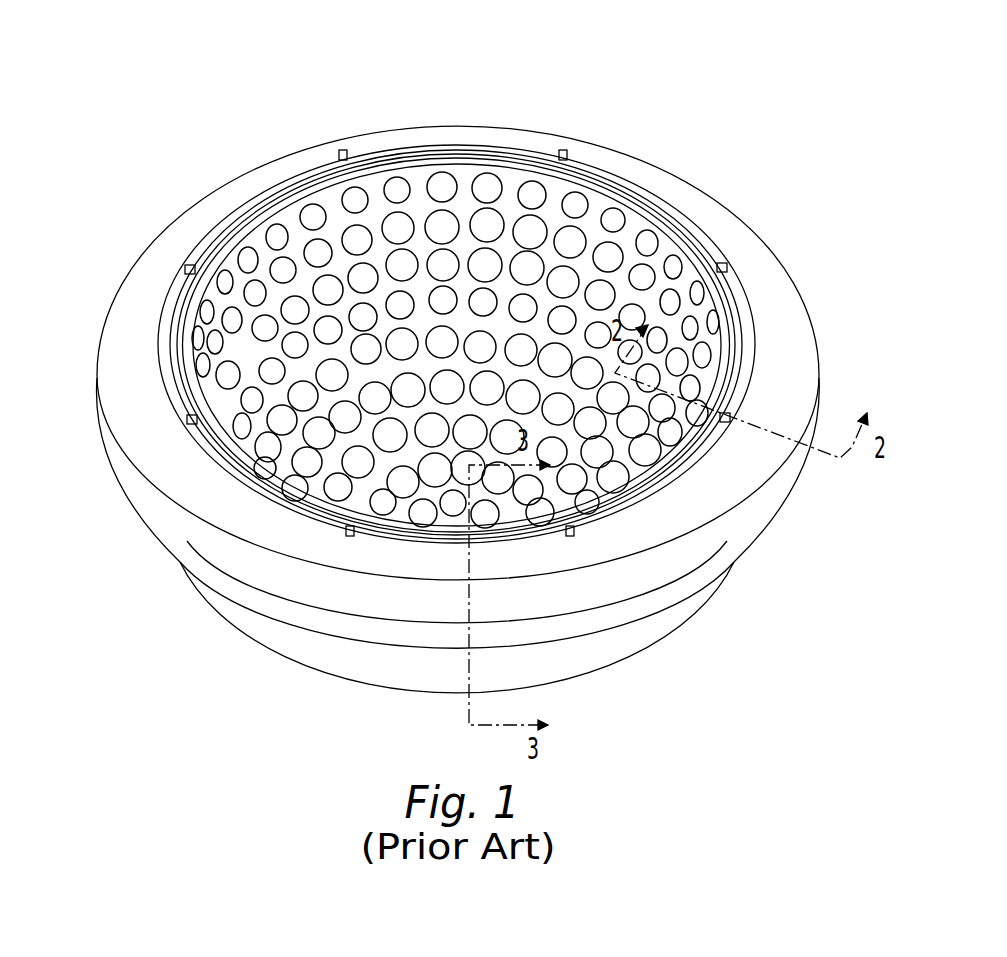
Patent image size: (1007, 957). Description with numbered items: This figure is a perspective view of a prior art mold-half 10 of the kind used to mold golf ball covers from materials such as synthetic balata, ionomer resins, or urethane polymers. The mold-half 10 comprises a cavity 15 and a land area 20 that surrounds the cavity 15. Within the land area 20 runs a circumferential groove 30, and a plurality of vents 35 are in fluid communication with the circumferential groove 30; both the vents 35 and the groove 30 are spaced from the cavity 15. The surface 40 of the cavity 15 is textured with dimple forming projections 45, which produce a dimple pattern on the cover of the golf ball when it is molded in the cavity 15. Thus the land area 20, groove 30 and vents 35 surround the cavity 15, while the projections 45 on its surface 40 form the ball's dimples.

The mold-half 10 is at (448, 375).
The cavity 15 is at (455, 272).
The land area 20 is at (710, 482).
The circumferential groove 30 is at (227, 233).
The vents 35 is at (190, 271).
The surface 40 is at (277, 350).
The dimple forming projections 45 is at (527, 268).